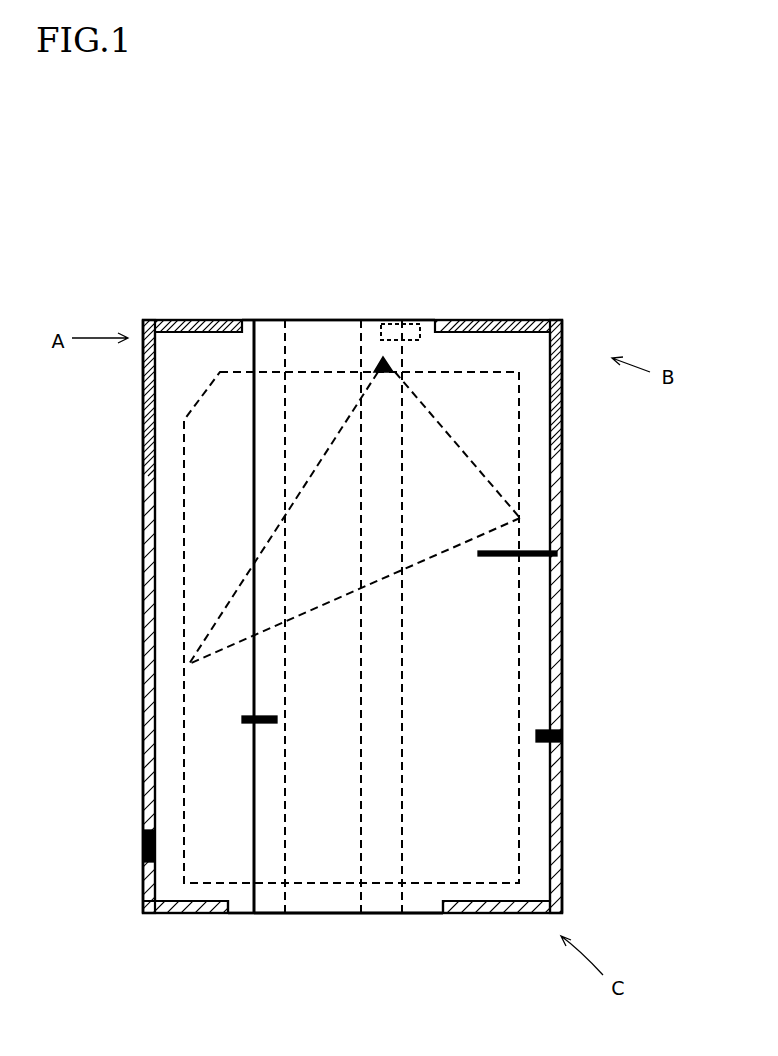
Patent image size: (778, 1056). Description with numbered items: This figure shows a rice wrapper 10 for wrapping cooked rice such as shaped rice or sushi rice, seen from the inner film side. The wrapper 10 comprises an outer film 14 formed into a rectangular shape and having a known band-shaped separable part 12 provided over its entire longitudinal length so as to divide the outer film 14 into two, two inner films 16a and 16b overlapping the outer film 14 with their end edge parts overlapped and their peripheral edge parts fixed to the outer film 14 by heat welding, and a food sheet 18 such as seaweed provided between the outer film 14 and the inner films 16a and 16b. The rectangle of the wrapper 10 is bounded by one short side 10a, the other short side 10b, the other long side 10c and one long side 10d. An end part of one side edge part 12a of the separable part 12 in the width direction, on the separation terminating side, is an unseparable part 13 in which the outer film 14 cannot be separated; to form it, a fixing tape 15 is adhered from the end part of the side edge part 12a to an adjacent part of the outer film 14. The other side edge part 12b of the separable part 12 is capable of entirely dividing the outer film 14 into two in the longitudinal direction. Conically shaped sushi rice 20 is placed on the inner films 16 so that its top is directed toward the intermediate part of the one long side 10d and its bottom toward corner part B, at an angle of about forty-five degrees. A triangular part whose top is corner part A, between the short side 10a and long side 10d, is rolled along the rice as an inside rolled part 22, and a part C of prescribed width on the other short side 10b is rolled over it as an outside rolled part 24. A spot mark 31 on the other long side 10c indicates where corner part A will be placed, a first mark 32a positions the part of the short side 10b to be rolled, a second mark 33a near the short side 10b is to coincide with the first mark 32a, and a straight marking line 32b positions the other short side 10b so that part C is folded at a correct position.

The rice wrapper 10 is at (571, 258).
The one short side 10a is at (366, 308).
The other short side 10b is at (367, 928).
The other long side 10c is at (575, 688).
The one long side 10d is at (131, 693).
The separable part 12 is at (432, 459).
The one side edge part 12a is at (400, 372).
The other side edge part 12b is at (360, 436).
The unseparable part 13 is at (393, 308).
The outer film 14 is at (565, 775).
The fixing tape 15 is at (408, 332).
The inner films 16 is at (293, 959).
The inner film 16a is at (348, 935).
The inner film 16b is at (197, 918).
The food sheet 18 is at (525, 470).
The sushi rice 20 is at (440, 560).
The inside rolled part 22 is at (118, 507).
The outside rolled part 24 is at (580, 881).
The spot mark (fifth mark) 31 is at (562, 736).
The first mark 32a is at (258, 716).
The marking line 32b is at (535, 553).
The second mark 33a is at (142, 845).